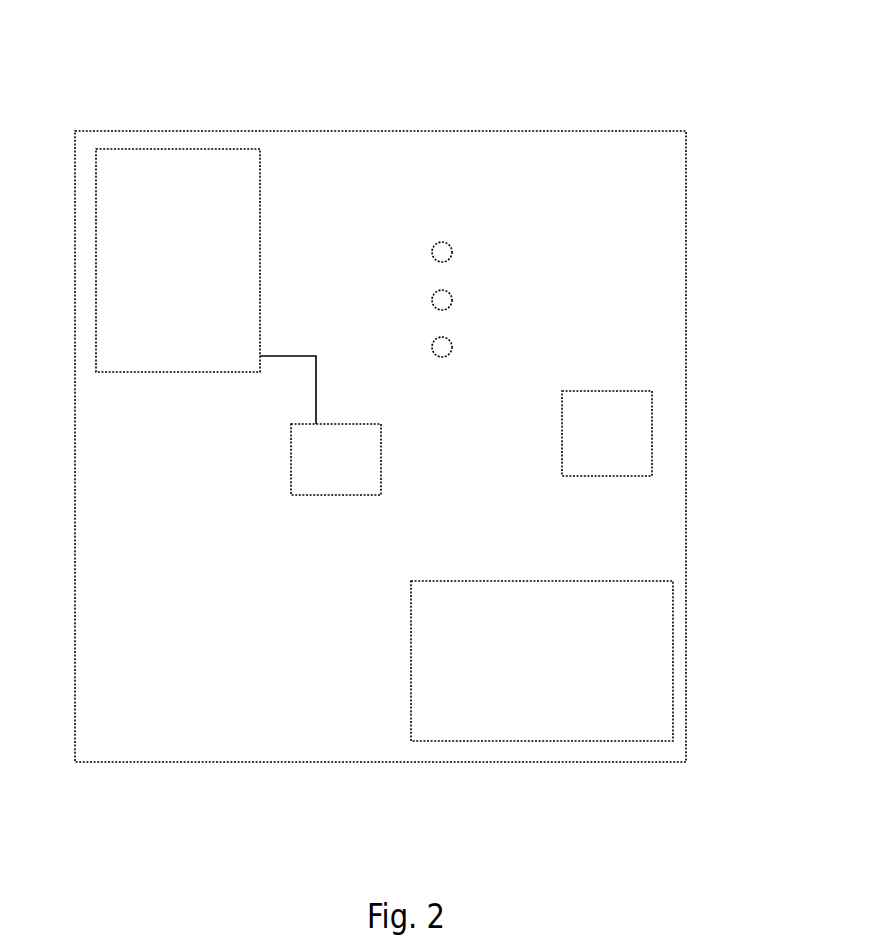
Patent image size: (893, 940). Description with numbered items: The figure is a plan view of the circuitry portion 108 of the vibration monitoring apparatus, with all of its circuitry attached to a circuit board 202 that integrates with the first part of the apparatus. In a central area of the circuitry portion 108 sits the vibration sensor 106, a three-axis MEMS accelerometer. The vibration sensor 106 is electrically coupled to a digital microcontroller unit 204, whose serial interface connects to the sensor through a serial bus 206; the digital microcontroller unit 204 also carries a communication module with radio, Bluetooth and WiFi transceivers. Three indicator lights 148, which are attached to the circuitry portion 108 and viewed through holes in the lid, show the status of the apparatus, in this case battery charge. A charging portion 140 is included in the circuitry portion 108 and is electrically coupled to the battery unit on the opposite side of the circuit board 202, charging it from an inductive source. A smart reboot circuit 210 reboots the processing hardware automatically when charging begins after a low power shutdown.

The circuitry portion 108 is at (259, 132).
The digital microcontroller unit 204 is at (107, 154).
The serial bus 206 is at (297, 354).
The vibration sensor 106 is at (291, 495).
The indicator lights 148 is at (451, 258).
The circuit board 202 is at (545, 203).
The smart reboot circuit 210 is at (653, 403).
The charging portion 140 is at (570, 579).